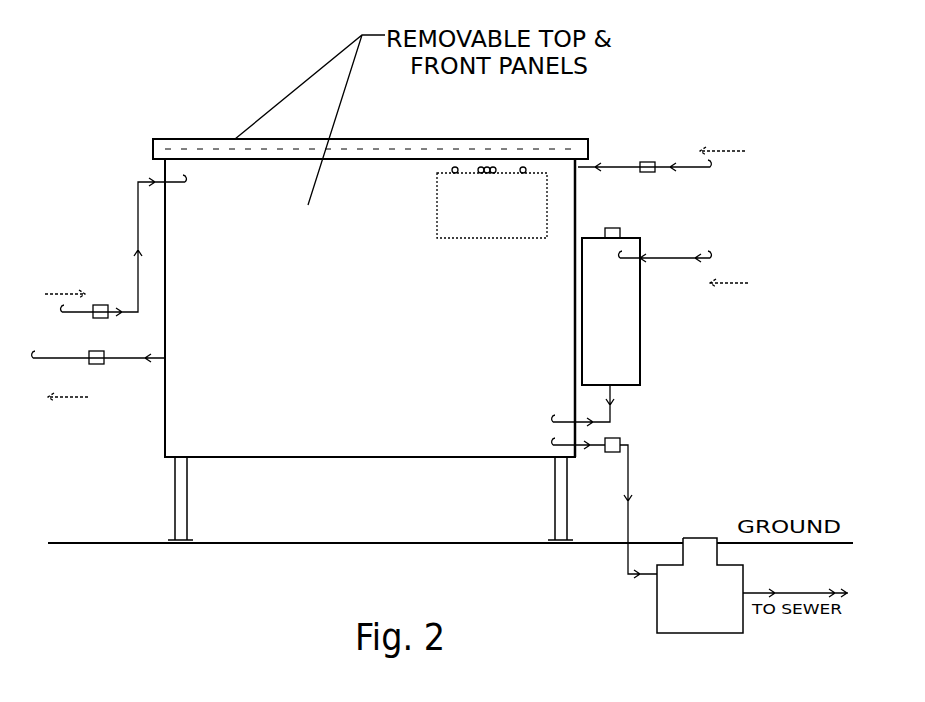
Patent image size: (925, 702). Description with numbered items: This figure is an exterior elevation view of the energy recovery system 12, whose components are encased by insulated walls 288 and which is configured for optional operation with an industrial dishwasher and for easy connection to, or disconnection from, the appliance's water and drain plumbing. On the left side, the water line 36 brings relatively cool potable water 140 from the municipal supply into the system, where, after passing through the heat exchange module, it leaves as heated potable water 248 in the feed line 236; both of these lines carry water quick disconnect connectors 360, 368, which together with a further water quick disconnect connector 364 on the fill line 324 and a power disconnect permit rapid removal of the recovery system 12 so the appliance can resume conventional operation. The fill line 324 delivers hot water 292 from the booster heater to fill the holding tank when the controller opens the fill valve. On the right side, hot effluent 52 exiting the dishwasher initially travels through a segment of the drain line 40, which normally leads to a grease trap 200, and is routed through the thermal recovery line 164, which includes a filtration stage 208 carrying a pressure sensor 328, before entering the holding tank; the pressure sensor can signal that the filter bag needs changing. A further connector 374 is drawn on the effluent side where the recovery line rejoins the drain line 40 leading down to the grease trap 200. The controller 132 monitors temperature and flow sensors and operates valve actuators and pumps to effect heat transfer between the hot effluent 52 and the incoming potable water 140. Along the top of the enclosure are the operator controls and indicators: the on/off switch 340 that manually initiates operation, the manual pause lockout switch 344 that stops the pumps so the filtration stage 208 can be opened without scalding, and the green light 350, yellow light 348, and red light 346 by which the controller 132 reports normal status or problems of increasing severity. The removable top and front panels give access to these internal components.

The energy recovery system 12 is at (203, 120).
The water line 36 is at (138, 205).
The drain line 40 is at (633, 500).
The effluent 52 is at (729, 272).
The controller 132 is at (492, 204).
The potable water 140 is at (65, 284).
The thermal recovery line 164 is at (652, 258).
The grease trap 200 is at (695, 598).
The filtration stage 208 is at (608, 310).
The feed line 236 is at (122, 353).
The heated potable water 248 is at (68, 389).
The insulated walls 288 is at (218, 402).
The hot water 292 is at (722, 139).
The fill line 324 is at (598, 165).
The pressure sensor 328 is at (620, 233).
The on/off switch 340 is at (452, 167).
The manual pause lockout switch 344 is at (525, 166).
The red light 346 is at (495, 166).
The yellow light 348 is at (487, 166).
The green light 350 is at (478, 167).
The water quick disconnect connector 360 is at (108, 318).
The water quick disconnect connector 364 is at (655, 163).
The water quick disconnect connector 368 is at (98, 364).
The valve 374 is at (622, 442).